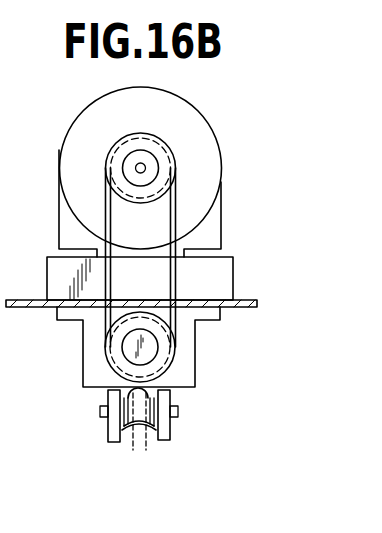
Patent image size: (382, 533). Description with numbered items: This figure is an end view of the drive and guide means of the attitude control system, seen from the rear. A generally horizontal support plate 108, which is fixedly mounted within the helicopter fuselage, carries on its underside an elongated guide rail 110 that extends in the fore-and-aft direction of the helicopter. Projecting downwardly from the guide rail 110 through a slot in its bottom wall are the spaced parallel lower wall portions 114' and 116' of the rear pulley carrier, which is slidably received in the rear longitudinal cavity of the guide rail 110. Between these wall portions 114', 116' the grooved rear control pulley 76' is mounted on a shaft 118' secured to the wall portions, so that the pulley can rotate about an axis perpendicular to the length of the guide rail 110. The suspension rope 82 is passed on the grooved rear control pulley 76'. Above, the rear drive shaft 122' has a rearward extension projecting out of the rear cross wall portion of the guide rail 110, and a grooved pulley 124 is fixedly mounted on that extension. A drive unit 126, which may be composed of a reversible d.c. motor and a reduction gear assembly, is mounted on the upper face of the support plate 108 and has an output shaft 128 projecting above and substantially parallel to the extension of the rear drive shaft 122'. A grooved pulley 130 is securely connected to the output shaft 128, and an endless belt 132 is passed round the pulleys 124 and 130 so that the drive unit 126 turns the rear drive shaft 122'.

The rear control pulley 76' is at (130, 440).
The suspension rope 82 is at (146, 436).
The support plate 108 is at (242, 300).
The guide rail 110 is at (195, 362).
The lower wall portion of rear pulley carrier 114' is at (78, 429).
The lower wall portion of rear pulley carrier 116' is at (192, 423).
The shaft 118' is at (198, 413).
The rear drive shaft 122' is at (92, 349).
The grooved pulley 124 is at (113, 366).
The drive unit 126 is at (213, 134).
The output shaft 128 is at (145, 168).
The grooved pulley 130 is at (110, 157).
The endless belt 132 is at (104, 208).